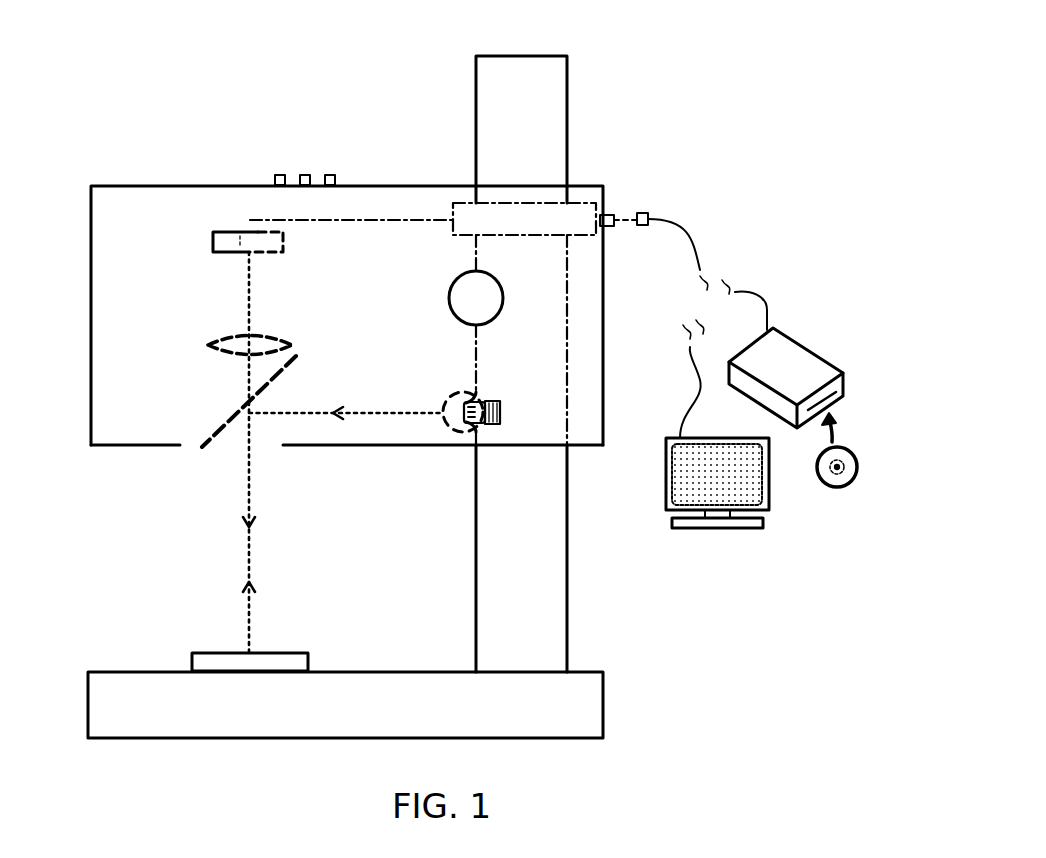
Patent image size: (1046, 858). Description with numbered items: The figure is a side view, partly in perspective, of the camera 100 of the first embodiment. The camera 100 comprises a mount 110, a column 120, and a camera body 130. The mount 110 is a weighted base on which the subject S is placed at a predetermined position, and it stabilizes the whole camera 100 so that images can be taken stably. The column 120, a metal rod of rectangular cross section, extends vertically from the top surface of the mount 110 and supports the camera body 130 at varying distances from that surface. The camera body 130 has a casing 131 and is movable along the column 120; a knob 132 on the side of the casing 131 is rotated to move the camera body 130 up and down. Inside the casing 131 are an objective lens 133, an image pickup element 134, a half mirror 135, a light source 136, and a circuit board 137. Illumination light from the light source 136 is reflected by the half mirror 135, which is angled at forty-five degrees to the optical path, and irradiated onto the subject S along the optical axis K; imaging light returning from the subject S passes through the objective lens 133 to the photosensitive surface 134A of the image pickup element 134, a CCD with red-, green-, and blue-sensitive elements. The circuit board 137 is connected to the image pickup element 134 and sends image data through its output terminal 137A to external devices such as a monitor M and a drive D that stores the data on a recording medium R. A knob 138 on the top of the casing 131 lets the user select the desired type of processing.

The camera 100 is at (637, 62).
The mount 110 is at (603, 712).
The column 120 is at (568, 585).
The camera body 130 is at (103, 184).
The casing 131 is at (117, 446).
The knob 132 is at (488, 305).
The objective lens 133 is at (215, 346).
The image pickup element 134 is at (241, 232).
The photosensitive surface 134A is at (222, 258).
The half mirror 135 is at (293, 365).
The light source 136 is at (458, 432).
The circuit board 137 is at (580, 210).
The output terminal 137A is at (605, 212).
The knob 138 is at (330, 175).
The drive D is at (797, 340).
The monitor M is at (735, 528).
The recording medium R is at (837, 487).
The optical axis K is at (249, 560).
The subject S is at (200, 653).